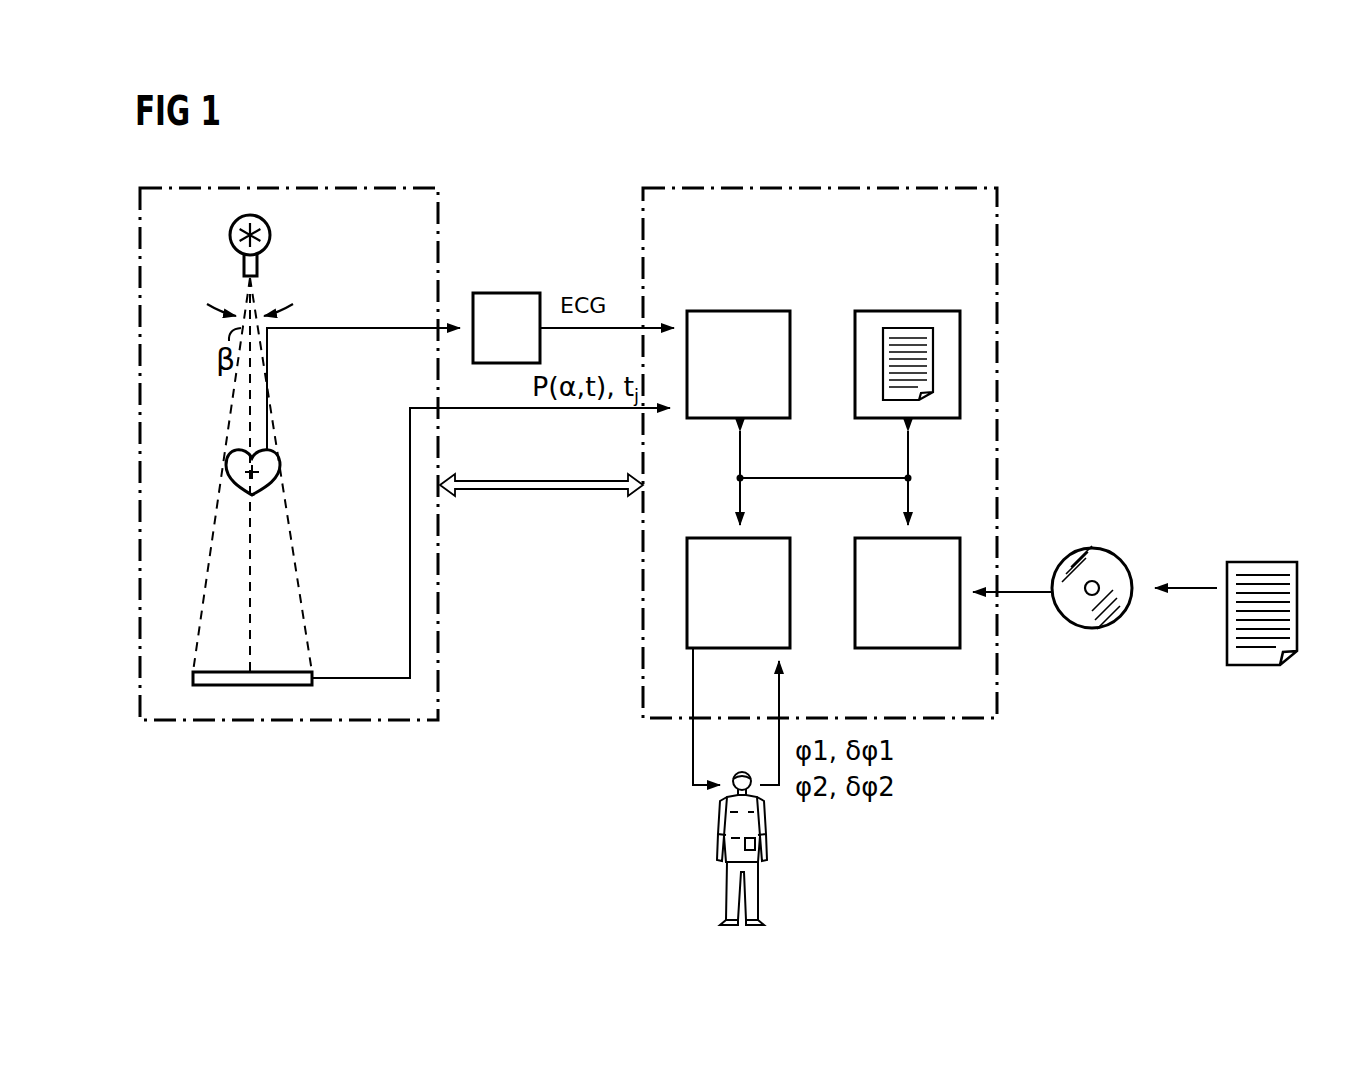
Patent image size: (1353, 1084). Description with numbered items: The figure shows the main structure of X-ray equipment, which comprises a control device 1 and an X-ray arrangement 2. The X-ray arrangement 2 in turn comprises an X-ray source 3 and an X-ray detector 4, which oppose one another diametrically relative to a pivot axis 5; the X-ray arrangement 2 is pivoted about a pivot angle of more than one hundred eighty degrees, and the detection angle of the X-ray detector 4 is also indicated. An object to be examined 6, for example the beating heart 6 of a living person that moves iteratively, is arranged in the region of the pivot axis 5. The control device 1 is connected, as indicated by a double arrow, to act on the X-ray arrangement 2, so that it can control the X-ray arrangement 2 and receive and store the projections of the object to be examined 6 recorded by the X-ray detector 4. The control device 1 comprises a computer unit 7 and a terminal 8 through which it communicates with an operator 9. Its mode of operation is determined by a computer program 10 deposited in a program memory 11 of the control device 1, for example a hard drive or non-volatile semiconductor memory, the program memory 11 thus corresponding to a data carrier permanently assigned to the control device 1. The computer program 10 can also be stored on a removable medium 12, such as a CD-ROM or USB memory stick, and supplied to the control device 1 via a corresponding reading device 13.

The control device 1 is at (831, 188).
The X-ray arrangement 2 is at (283, 188).
The X-ray source 3 is at (231, 236).
The X-ray detector 4 is at (193, 678).
The pivot axis 5 is at (249, 480).
The object to be examined 6 is at (272, 488).
The computer unit 7 is at (745, 311).
The terminal 8 is at (706, 538).
The operator 9 is at (722, 816).
The computer program 10 is at (899, 328).
The program memory 11 is at (942, 311).
The removable medium 12 is at (1093, 628).
The reading device 13 is at (942, 538).